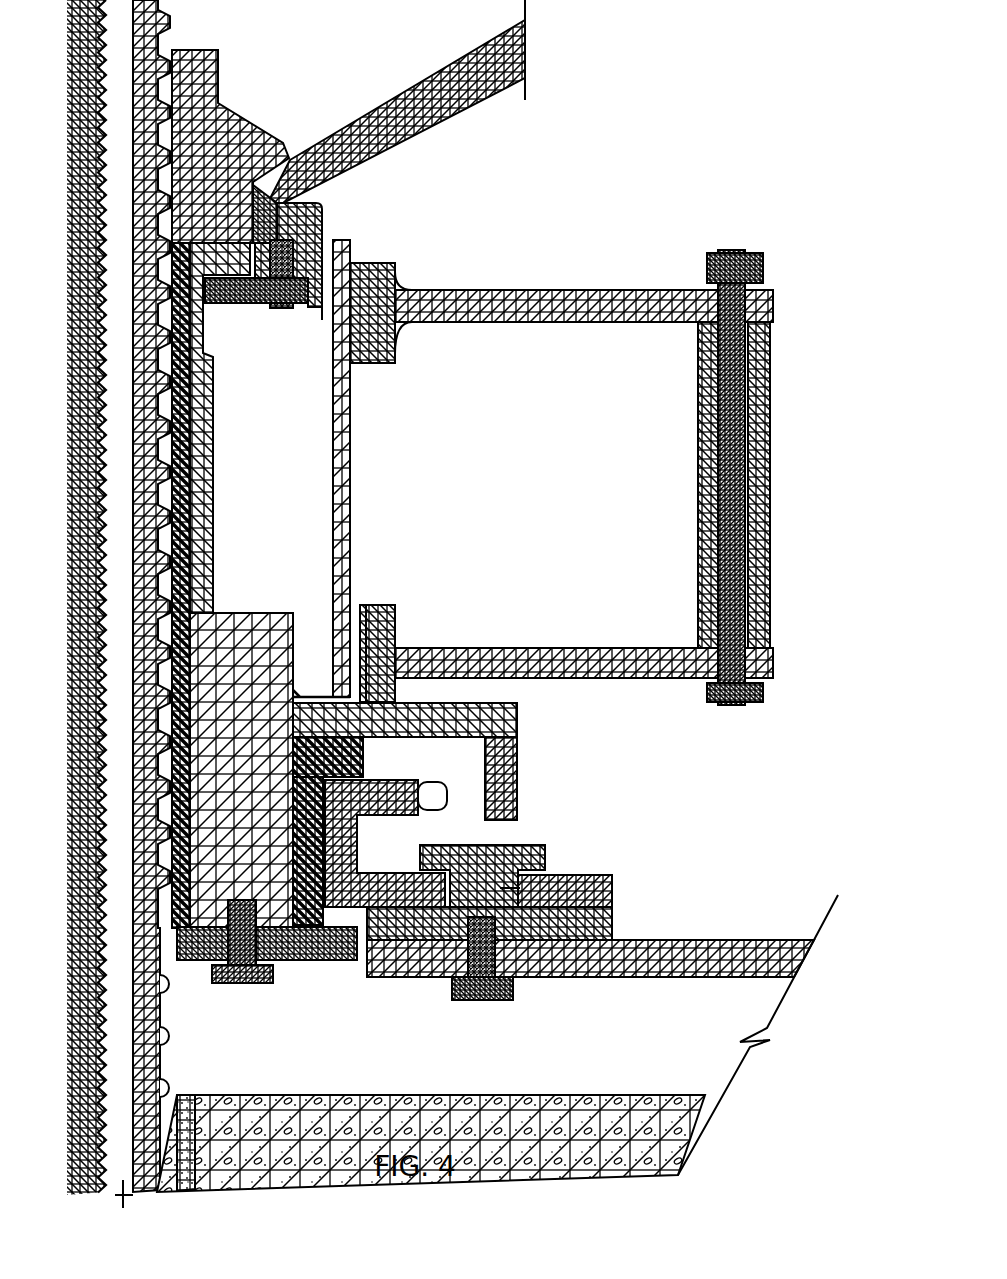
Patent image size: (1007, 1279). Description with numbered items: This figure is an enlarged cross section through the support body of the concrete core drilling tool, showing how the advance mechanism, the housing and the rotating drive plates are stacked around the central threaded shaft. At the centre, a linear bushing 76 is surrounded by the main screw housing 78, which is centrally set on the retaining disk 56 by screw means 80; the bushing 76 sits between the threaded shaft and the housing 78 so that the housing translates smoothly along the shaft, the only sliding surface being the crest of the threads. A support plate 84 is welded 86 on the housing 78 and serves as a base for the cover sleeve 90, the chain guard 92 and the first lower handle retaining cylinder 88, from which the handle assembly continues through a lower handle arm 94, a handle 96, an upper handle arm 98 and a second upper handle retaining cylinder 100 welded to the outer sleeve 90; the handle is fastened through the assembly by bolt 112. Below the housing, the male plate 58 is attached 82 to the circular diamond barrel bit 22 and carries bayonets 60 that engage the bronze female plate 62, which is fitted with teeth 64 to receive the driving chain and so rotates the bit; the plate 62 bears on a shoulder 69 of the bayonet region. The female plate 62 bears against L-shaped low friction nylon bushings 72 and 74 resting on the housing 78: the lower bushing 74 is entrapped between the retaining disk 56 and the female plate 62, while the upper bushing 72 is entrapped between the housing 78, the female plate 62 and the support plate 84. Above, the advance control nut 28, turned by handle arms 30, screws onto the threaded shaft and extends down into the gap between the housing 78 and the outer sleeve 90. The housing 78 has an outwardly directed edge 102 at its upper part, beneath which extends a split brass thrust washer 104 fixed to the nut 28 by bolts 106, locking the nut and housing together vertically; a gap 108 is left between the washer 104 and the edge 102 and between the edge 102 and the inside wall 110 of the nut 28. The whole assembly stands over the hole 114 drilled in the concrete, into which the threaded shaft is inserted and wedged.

The circular diamond barrel bit 22 is at (648, 978).
The advance control nut 28 is at (220, 52).
The handle arms 30 is at (463, 72).
The disk 56 is at (338, 963).
The male plate 58 is at (610, 912).
The bayonets 60 is at (540, 848).
The bronze female plate 62 is at (368, 868).
The teeth 64 is at (433, 800).
The clamp shoulder 69 is at (502, 888).
The upper L-shaped bushing 72 is at (352, 762).
The lower L-shaped bushing 74 is at (383, 968).
The linear bushing 76 is at (200, 522).
The main screw housing 78 is at (228, 620).
The screw means 80 is at (244, 985).
The attachment 82 is at (513, 1000).
The support plate 84 is at (505, 720).
The weld 86 is at (297, 697).
The first lower handle retaining cylinder 88 is at (396, 605).
The cover sleeve 90 is at (350, 525).
The chain guard 92 is at (512, 782).
The lower handle arm 94 is at (685, 683).
The handle 96 is at (700, 497).
The upper handle arm 98 is at (655, 318).
The second upper handle retaining cylinder 100 is at (400, 270).
The outwardly directed edge 102 is at (290, 205).
The split brass thrust washer 104 is at (240, 300).
The bolts 106 is at (324, 330).
The gap 108 is at (224, 300).
The inside wall 110 is at (318, 237).
The bolt 112 is at (718, 372).
The hole 114 is at (188, 1092).